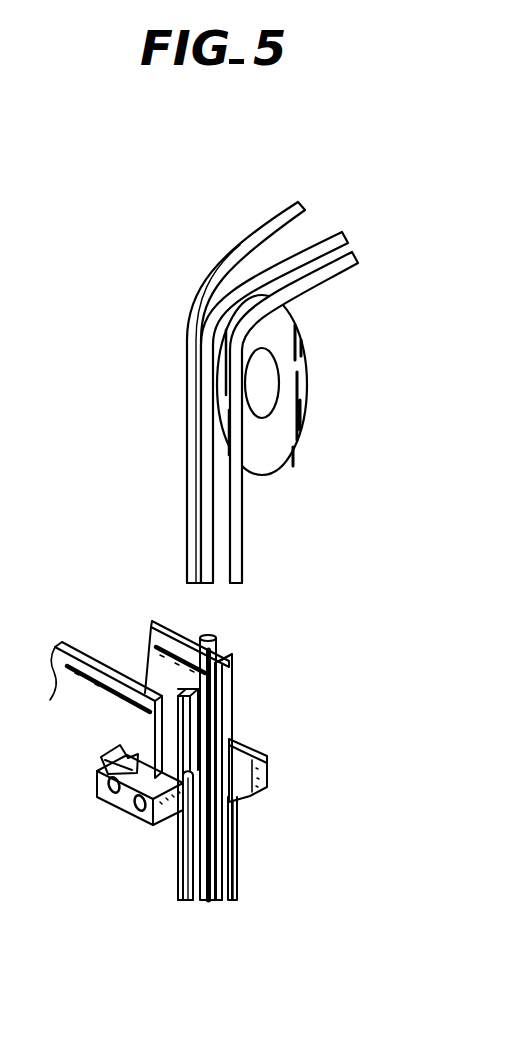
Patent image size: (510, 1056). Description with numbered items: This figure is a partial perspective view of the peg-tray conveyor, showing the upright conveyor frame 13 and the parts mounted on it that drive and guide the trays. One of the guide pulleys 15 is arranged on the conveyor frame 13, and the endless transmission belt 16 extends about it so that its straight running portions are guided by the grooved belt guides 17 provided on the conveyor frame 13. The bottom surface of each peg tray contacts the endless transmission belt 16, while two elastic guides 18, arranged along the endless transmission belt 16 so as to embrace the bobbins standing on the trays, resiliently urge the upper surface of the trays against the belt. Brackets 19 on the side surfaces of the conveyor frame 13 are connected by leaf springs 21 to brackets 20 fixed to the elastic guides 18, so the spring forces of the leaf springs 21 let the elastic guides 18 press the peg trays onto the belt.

The conveyor frame 13 is at (77, 663).
The guide pulleys 15 is at (298, 403).
The endless transmission belt 16 is at (342, 233).
The grooved belt guides 17 is at (222, 716).
The elastic guides 18 is at (208, 278).
The brackets 19 is at (107, 748).
The brackets 20 is at (166, 822).
The leaf springs 21 is at (116, 806).